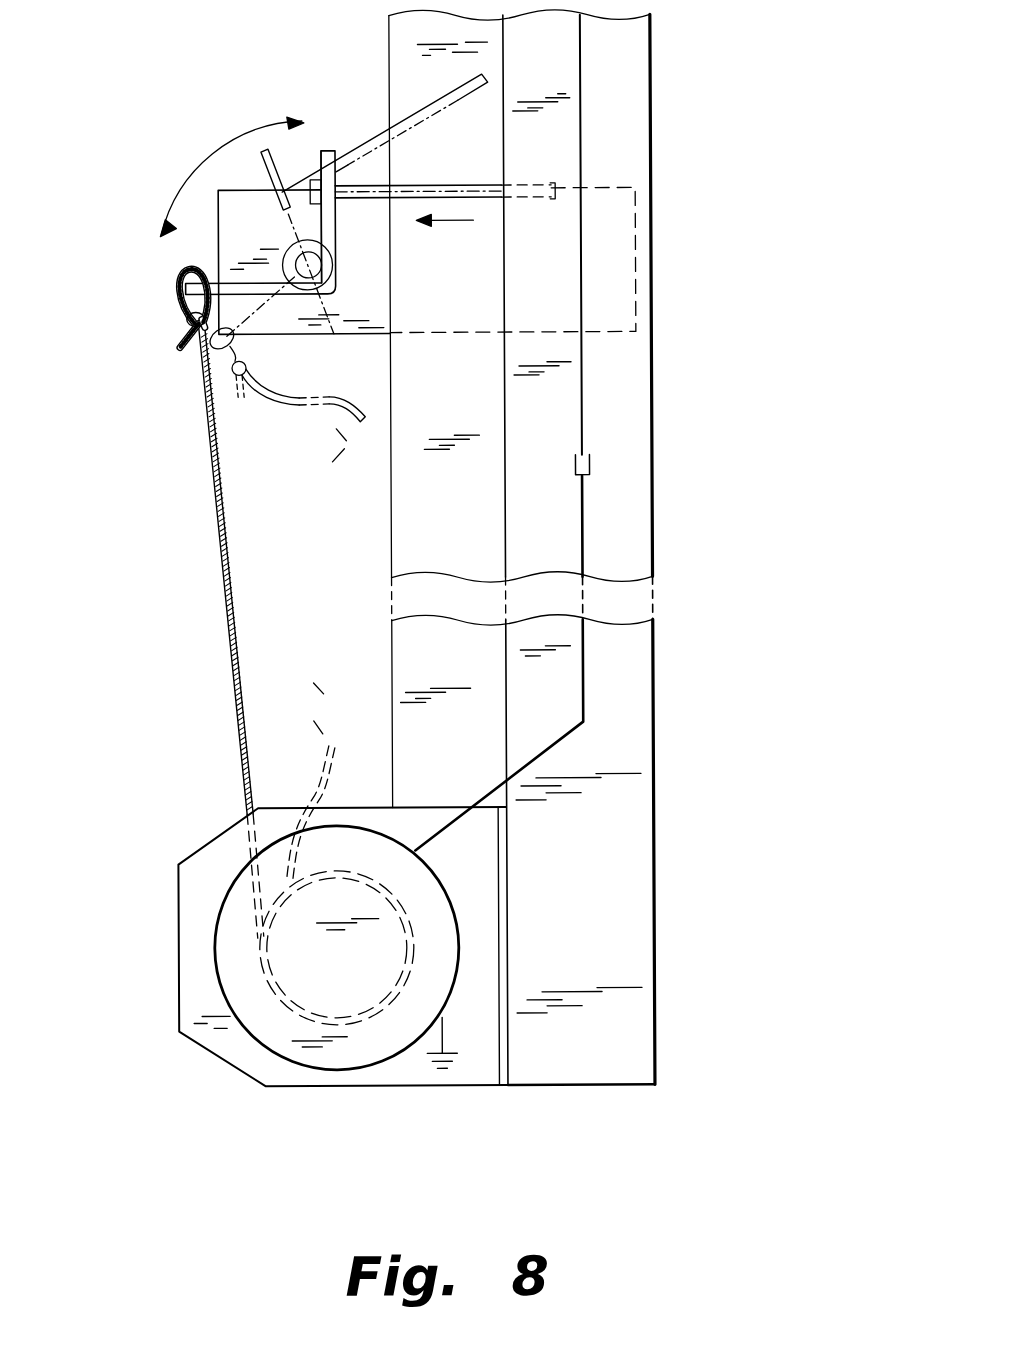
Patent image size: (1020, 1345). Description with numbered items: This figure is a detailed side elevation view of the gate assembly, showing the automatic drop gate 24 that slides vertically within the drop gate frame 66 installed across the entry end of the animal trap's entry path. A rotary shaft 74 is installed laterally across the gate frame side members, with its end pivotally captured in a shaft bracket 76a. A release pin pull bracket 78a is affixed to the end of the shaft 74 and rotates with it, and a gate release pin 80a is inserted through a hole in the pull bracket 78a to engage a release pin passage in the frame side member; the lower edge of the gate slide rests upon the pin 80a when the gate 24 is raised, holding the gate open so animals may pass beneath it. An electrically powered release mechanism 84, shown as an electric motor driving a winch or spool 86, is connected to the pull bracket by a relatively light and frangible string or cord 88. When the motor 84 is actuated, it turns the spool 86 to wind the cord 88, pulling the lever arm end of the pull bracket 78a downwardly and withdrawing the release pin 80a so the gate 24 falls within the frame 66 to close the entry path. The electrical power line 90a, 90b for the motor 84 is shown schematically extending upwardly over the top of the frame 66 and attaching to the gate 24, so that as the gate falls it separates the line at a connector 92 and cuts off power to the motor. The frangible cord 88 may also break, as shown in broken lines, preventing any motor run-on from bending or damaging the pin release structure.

The automatic drop gate 24 is at (392, 41).
The drop gate frame 66 is at (652, 72).
The rotary shaft 74 is at (284, 255).
The left side shaft bracket 76a is at (302, 343).
The release pin pull bracket 78a is at (340, 254).
The gate release pin 80a is at (476, 97).
The electrical power line 90a is at (582, 260).
The electrical power line 90b is at (584, 521).
The connector 92 is at (590, 458).
The frangible string or cord 88 is at (243, 456).
The winch or spool 86 is at (258, 957).
The electrically powered release mechanism 84 is at (337, 1068).